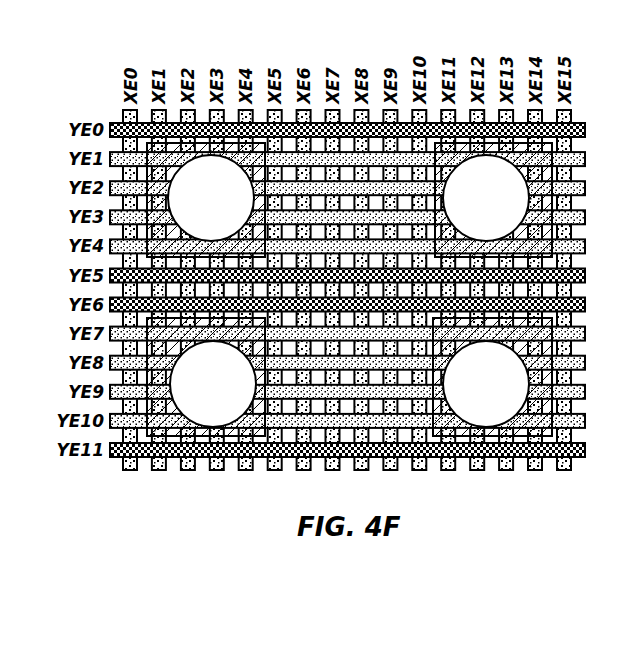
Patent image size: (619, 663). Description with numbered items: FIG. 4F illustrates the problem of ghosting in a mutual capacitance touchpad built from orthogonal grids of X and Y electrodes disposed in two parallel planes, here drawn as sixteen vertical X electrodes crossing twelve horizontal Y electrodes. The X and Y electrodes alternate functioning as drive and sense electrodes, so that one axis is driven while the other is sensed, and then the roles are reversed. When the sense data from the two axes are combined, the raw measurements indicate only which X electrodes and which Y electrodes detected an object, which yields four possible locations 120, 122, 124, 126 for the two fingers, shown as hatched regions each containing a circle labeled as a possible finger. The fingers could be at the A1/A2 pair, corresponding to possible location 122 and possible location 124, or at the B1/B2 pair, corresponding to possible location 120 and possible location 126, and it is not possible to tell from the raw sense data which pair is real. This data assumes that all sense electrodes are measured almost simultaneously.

The possible location 120 is at (228, 162).
The possible location 122 is at (491, 160).
The possible location 124 is at (178, 398).
The possible location 126 is at (512, 400).